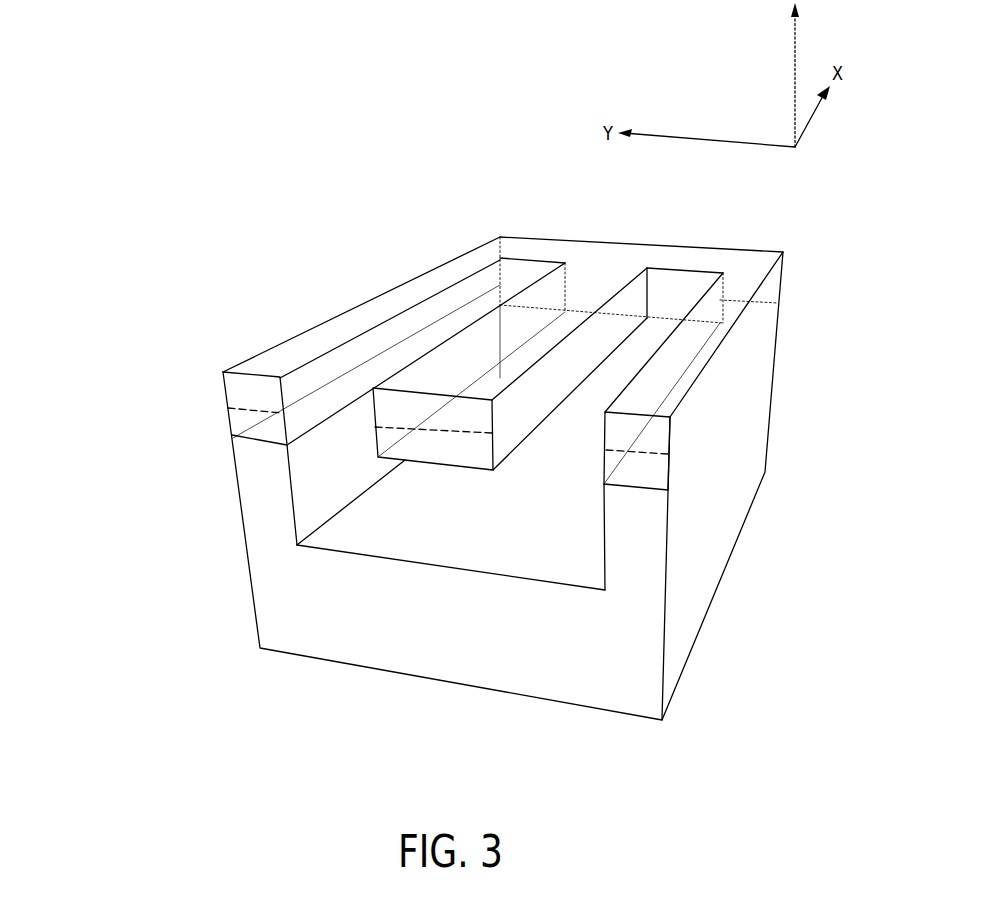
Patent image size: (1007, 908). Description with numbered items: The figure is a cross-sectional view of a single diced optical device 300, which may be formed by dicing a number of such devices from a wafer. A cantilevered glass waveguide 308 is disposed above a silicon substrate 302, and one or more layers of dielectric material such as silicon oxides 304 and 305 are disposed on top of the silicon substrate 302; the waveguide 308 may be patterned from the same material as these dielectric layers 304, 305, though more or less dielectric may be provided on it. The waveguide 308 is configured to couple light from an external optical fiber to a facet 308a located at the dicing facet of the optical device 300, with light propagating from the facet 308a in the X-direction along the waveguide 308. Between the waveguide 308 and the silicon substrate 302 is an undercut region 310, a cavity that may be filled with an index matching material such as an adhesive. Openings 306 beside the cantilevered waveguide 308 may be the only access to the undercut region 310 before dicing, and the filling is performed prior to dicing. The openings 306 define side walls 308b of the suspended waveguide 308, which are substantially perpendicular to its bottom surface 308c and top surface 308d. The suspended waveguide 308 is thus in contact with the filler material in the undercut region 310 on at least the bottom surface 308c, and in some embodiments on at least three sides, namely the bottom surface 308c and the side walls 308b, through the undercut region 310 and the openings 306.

The diced optical device 300 is at (300, 134).
The silicon substrate 302 is at (330, 650).
The silicon oxide layer 304 is at (204, 425).
The silicon oxide layer 305 is at (204, 388).
The opening 306 is at (303, 379).
The cantilevered glass waveguide 308 is at (446, 349).
The facet 308a is at (462, 452).
The side wall 308b is at (533, 413).
The bottom surface 308c is at (410, 463).
The top surface 308d is at (492, 338).
The undercut region 310 is at (558, 558).